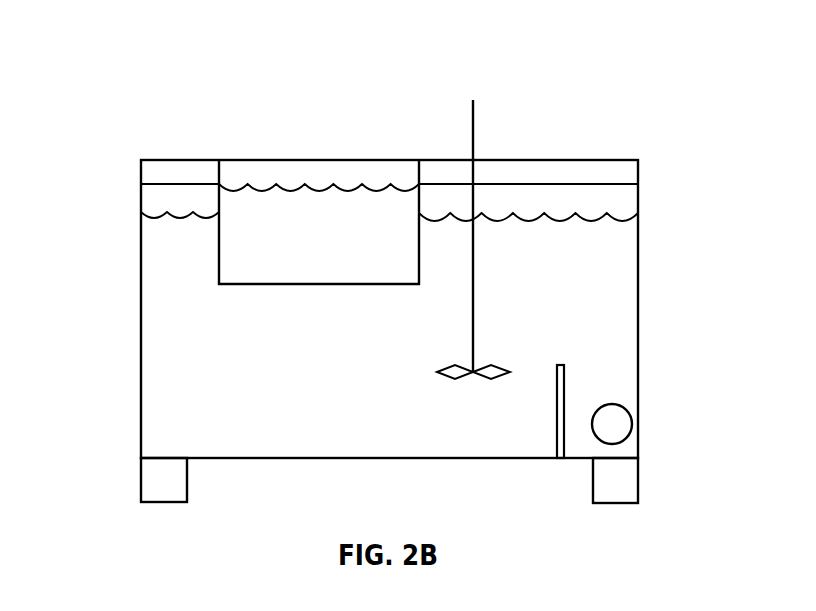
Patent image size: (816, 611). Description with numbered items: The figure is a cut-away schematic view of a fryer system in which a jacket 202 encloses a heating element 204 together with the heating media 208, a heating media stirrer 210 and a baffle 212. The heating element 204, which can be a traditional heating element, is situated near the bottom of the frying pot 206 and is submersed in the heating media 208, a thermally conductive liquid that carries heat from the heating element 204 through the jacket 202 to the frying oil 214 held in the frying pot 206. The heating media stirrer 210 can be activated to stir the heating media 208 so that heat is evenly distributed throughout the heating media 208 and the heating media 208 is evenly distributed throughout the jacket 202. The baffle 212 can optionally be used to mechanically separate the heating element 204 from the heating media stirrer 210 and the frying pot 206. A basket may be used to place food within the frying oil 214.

The jacket 202 is at (130, 266).
The heating element 204 is at (637, 413).
The frying pot 206 is at (232, 167).
The heating media 208 is at (603, 208).
The heating media stirrer 210 is at (487, 297).
The baffle 212 is at (576, 388).
The frying oil 214 is at (350, 181).